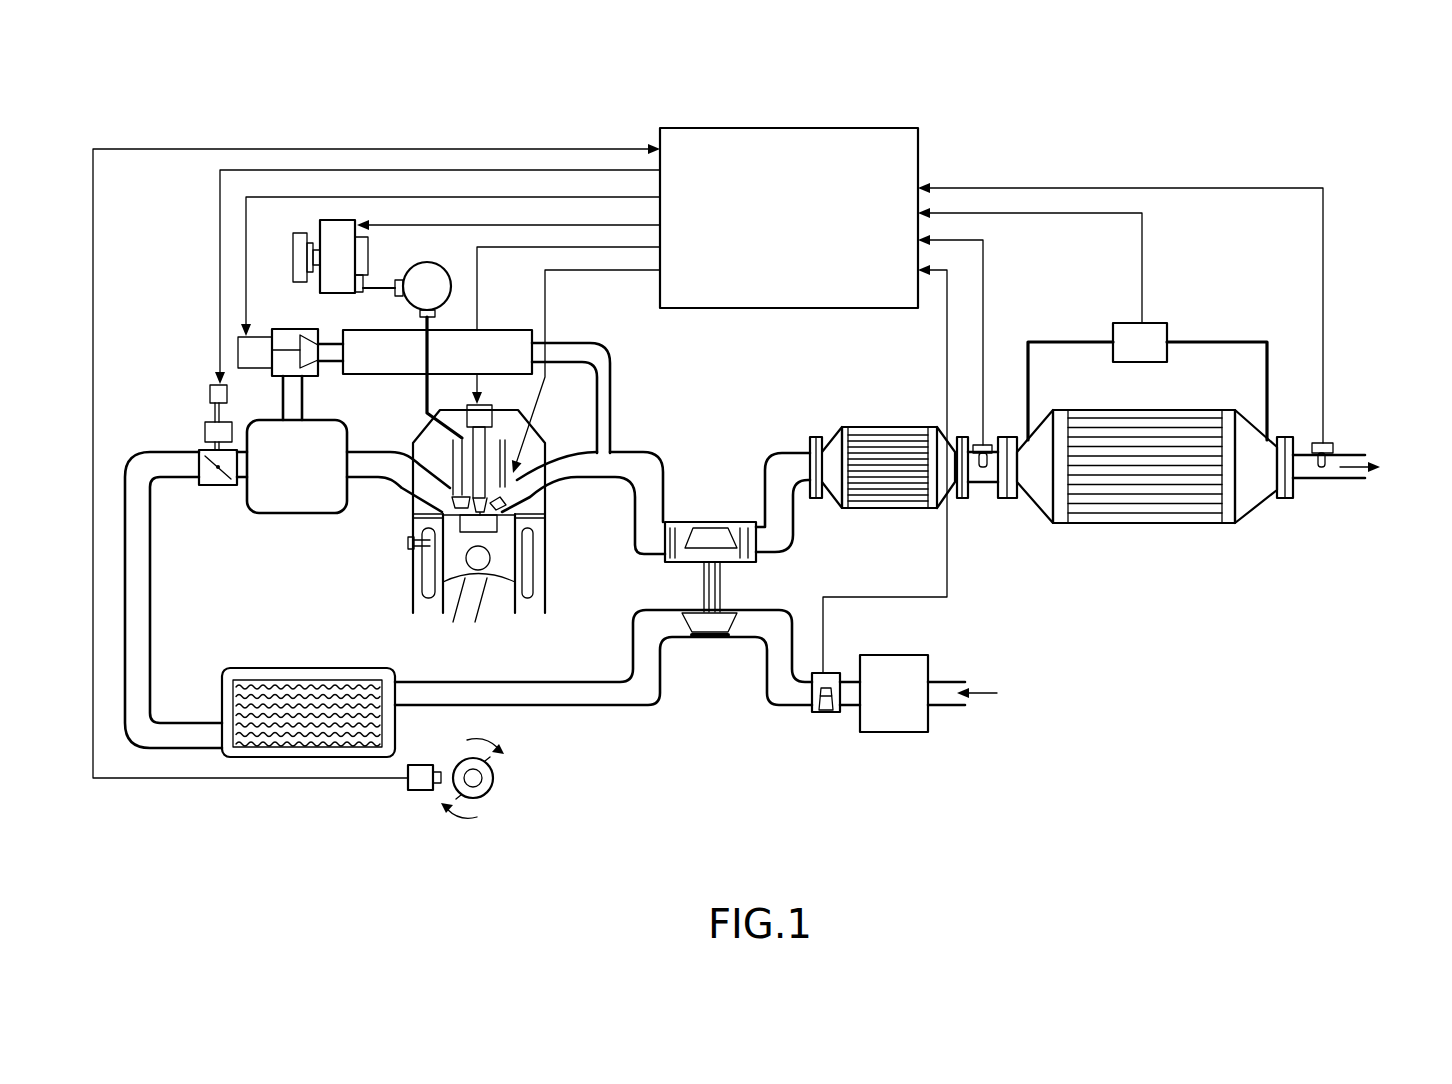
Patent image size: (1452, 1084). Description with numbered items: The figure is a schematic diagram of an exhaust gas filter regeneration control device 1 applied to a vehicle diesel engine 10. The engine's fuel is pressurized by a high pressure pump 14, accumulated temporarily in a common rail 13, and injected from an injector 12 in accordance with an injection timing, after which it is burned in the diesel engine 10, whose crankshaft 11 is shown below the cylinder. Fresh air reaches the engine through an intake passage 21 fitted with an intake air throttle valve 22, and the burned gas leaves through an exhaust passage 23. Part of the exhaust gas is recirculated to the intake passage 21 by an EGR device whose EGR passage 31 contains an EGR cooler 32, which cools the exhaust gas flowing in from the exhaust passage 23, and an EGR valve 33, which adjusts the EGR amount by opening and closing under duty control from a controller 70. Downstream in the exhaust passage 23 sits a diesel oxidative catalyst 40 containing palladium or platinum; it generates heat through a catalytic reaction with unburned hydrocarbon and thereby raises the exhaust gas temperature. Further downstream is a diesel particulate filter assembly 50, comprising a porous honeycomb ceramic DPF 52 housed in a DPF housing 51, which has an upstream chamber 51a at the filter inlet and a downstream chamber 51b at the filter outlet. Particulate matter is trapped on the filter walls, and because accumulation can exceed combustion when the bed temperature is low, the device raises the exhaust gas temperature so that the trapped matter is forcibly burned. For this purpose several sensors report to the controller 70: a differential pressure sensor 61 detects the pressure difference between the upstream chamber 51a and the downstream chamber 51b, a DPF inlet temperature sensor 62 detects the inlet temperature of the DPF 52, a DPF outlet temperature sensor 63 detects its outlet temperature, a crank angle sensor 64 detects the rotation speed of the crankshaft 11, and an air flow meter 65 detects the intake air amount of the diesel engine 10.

The exhaust gas filter regeneration control device 1 is at (1383, 139).
The diesel engine 10 is at (546, 528).
The crankshaft 11 is at (494, 776).
The injector 12 is at (482, 436).
The common rail 13 is at (436, 273).
The high pressure pump 14 is at (335, 290).
The intake passage 21 is at (377, 479).
The intake air throttle valve 22 is at (217, 486).
The exhaust passage 23 is at (641, 463).
The EGR passage 31 is at (611, 378).
The EGR cooler 32 is at (500, 332).
The EGR valve 33 is at (292, 330).
The diesel oxidative catalyst 40 is at (874, 427).
The diesel particulate filter assembly 50 is at (1145, 536).
The DPF housing 51 is at (1093, 525).
The upstream chamber 51a is at (1045, 500).
The downstream chamber 51b is at (1245, 500).
The DPF 52 is at (1145, 516).
The differential pressure sensor 61 is at (1153, 332).
The DPF inlet temperature sensor 62 is at (991, 445).
The DPF outlet temperature sensor 63 is at (1328, 443).
The crank angle sensor 64 is at (420, 792).
The air flow meter 65 is at (823, 715).
The controller 70 is at (875, 140).